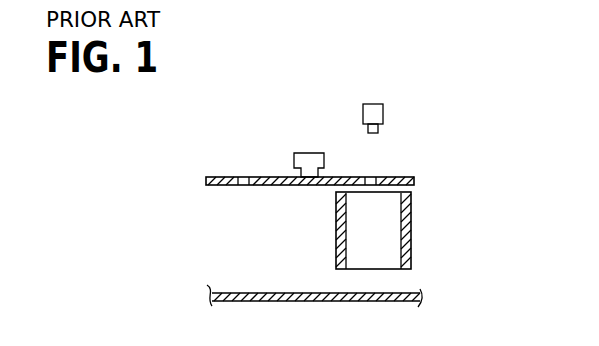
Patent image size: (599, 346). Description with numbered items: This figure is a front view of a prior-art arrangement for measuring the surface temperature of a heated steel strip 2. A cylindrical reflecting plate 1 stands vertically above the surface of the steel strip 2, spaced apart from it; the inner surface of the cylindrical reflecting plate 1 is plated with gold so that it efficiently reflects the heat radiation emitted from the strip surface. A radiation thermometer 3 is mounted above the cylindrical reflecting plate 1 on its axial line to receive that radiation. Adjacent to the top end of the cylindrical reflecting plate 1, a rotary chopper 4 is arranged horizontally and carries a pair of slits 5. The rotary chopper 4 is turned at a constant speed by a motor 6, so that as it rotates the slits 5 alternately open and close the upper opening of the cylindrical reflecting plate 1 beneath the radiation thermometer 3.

The cylindrical reflecting plate 1 is at (411, 233).
The heated steel strip 2 is at (398, 294).
The radiation thermometer 3 is at (384, 112).
The rotary chopper 4 is at (402, 177).
The slits 5 is at (240, 177).
The motor 6 is at (307, 158).